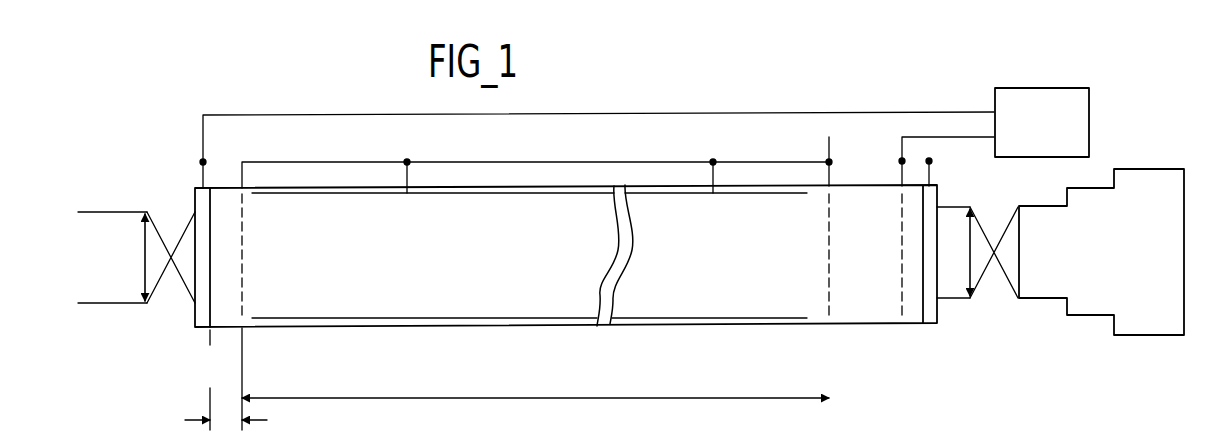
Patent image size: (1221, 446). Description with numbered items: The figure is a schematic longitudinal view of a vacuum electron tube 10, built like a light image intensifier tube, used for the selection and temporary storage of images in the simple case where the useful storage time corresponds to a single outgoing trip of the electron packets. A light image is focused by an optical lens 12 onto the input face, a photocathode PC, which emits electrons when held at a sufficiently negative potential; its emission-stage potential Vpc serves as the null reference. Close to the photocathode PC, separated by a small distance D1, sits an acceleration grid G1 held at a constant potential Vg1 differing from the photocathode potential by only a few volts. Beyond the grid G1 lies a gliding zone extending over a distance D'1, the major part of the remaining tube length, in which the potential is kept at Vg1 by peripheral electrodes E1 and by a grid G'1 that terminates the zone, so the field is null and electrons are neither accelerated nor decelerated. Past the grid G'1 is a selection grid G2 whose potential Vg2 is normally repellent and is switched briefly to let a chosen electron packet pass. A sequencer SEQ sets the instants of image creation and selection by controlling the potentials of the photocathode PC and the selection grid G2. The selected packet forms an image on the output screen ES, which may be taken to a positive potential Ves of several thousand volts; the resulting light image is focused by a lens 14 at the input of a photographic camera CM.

The electron tube 10 is at (433, 328).
The optical lens 12 is at (146, 272).
The lens 14 is at (971, 268).
The photocathode PC is at (197, 315).
The acceleration grid G1 is at (243, 303).
The grid terminating the gliding zone G'1 is at (814, 281).
The selection grid G2 is at (903, 294).
The output screen ES is at (931, 303).
The peripheral electrodes E1 is at (672, 194).
The photocathode potential Vpc is at (580, 150).
The grid G1 potential Vg1 is at (537, 165).
The selection grid potential Vg2 is at (921, 161).
The output screen potential Ves is at (946, 167).
The sequencer SEQ is at (1042, 122).
The photographic camera CM is at (1138, 325).
The distance between photocathode and grid G1 D1 is at (226, 379).
The gliding zone distance D'1 is at (535, 385).